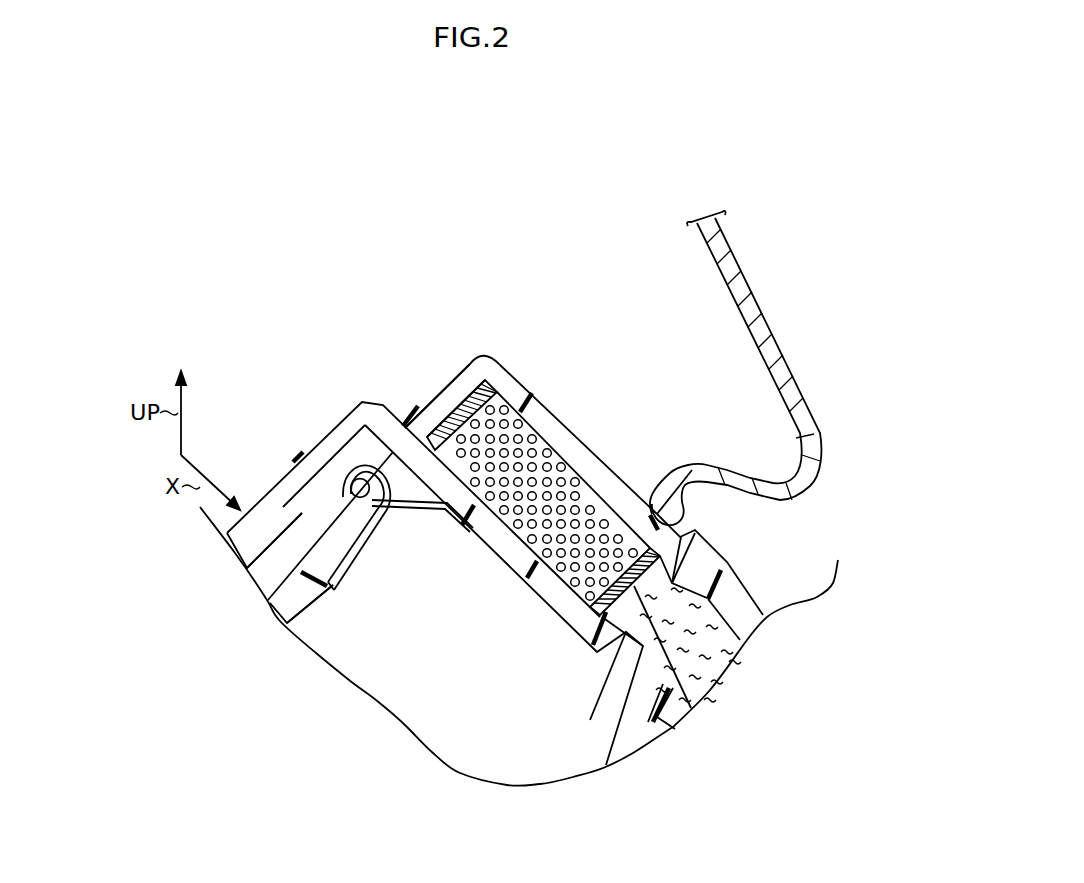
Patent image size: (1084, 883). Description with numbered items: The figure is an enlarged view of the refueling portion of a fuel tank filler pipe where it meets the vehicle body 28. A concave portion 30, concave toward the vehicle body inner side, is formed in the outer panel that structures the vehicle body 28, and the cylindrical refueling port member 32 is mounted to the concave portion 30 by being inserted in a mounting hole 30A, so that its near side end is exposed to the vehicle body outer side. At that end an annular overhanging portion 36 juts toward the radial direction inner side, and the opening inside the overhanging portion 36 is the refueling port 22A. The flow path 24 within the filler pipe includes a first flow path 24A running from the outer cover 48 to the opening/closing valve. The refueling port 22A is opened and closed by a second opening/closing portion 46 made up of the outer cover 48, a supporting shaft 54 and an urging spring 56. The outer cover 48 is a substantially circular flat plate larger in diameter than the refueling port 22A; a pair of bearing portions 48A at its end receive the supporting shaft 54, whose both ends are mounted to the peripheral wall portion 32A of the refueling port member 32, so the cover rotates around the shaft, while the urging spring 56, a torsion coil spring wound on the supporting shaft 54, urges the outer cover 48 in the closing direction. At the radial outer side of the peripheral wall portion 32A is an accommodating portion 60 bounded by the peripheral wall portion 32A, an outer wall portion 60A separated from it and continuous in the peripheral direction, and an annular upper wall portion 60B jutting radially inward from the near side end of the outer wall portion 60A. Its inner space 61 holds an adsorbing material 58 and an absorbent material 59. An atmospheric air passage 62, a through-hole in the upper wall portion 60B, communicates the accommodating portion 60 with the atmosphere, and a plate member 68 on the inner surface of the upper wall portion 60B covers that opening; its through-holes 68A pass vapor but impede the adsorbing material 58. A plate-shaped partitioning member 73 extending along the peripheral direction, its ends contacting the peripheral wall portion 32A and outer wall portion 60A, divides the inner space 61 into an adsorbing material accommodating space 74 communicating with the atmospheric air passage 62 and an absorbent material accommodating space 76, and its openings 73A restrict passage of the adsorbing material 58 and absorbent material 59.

The refueling port 22A is at (326, 490).
The first flow path 24A is at (476, 735).
The flow path 24 is at (519, 679).
The vehicle body 28 is at (723, 368).
The concave portion 30 is at (737, 312).
The mounting hole 30A is at (654, 505).
The refueling port member 32 is at (504, 595).
The peripheral wall portion 32A is at (536, 594).
The overhanging portion 36 is at (318, 448).
The second opening/closing portion 46 is at (353, 516).
The outer cover 48 is at (308, 612).
The bearing portions 48A is at (356, 488).
The supporting shaft 54 is at (343, 493).
The urging spring 56 is at (430, 508).
The adsorbing material 58 is at (537, 425).
The absorbent material 59 is at (740, 657).
The accommodating portion 60 is at (584, 441).
The outer wall portion 60A is at (624, 466).
The upper wall portion 60B is at (448, 386).
The inner space 61 is at (686, 507).
The atmospheric air passage 62 is at (442, 388).
The plate member 68 is at (501, 405).
The through-holes 68A is at (470, 392).
The partitioning member 73 is at (655, 657).
The openings 73A is at (628, 596).
The adsorbing material accommodating space 74 is at (558, 457).
The absorbent material accommodating space 76 is at (726, 624).